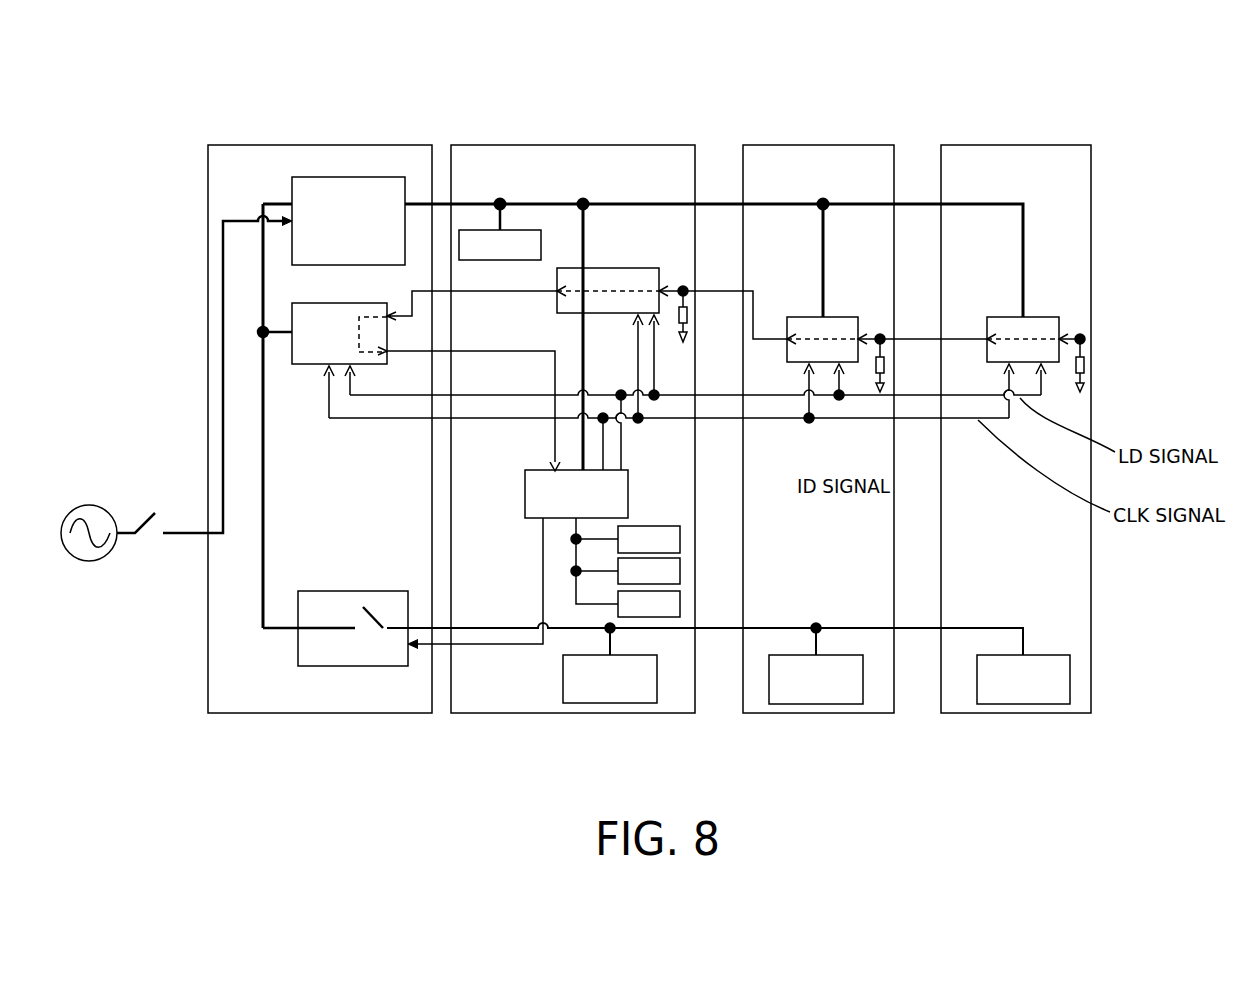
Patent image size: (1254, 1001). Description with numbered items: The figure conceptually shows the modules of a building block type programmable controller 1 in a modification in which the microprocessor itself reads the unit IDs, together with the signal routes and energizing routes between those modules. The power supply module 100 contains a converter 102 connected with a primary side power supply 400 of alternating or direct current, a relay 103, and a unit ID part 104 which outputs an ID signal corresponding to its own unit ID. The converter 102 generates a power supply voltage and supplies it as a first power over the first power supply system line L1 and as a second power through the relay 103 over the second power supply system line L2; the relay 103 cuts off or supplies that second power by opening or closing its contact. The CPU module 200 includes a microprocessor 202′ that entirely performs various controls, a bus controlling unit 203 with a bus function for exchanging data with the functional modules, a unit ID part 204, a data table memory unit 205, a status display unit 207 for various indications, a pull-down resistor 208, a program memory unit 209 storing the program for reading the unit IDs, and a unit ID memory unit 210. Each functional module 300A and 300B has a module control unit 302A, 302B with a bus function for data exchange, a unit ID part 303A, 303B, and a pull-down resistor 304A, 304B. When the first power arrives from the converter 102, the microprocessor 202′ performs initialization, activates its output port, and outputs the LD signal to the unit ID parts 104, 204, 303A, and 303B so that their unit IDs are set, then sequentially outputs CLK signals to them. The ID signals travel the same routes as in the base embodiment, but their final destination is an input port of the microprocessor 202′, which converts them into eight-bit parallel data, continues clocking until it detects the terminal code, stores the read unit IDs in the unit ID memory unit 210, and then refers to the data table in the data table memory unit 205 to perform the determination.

The programmable controller 1 is at (1198, 120).
The power supply module 100 is at (322, 139).
The converter 102 is at (378, 177).
The relay 103 is at (355, 591).
The unit ID part 104 is at (303, 370).
The primary side power supply 400 is at (90, 505).
The CPU module 200 is at (575, 139).
The status display unit 207 is at (527, 230).
The unit ID part 204 is at (640, 268).
The pull-down resistor 208 is at (689, 287).
The microprocessor 202′ is at (525, 497).
The data table memory unit 205 is at (666, 526).
The program memory unit 209 is at (682, 571).
The unit ID memory unit 210 is at (682, 604).
The bus controlling unit 203 is at (612, 705).
The functional module 300A is at (821, 139).
The unit ID part 303A is at (853, 317).
The pull-down resistor 304A is at (843, 472).
The module control unit 302A is at (817, 705).
The first power supply system line L1 is at (977, 204).
The functional module 300B is at (1020, 139).
The unit ID part 303B is at (1052, 317).
The pull-down resistor 304B is at (1091, 350).
The module control unit 302B is at (1024, 705).
The second power supply system line L2 is at (983, 626).